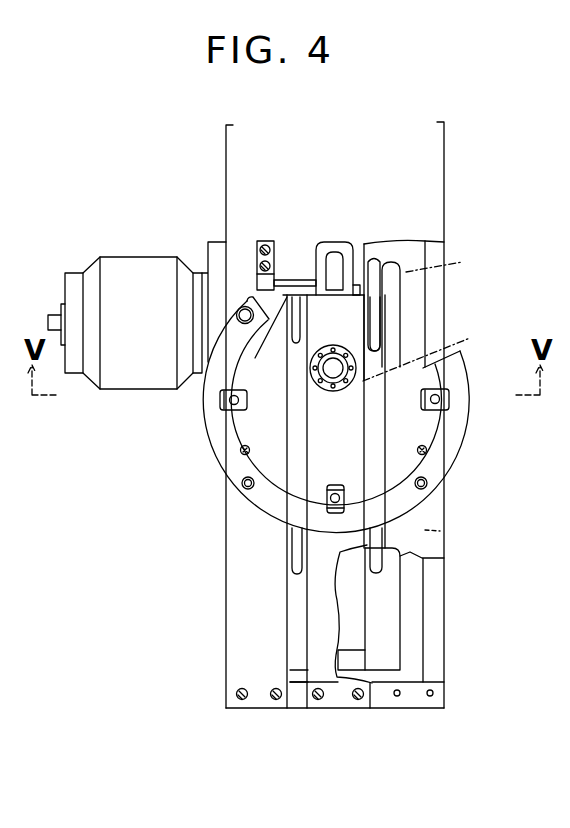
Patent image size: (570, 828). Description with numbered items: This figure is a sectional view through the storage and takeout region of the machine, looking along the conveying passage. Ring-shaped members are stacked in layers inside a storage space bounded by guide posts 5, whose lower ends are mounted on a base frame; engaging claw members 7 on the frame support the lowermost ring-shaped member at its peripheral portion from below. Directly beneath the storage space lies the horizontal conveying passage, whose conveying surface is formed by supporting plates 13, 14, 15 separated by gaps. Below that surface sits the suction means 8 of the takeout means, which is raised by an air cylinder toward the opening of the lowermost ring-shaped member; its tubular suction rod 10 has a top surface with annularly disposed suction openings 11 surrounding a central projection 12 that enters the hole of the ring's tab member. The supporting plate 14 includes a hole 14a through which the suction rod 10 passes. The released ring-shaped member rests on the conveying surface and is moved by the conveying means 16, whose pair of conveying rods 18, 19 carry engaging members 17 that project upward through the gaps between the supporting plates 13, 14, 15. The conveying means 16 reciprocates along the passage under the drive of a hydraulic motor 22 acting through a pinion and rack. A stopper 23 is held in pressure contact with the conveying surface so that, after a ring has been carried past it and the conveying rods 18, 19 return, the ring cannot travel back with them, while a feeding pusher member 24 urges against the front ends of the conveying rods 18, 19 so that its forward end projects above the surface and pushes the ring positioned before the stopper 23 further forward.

The guide post 5 is at (243, 452).
The engaging claw member 7 is at (219, 400).
The suction means 8 is at (366, 379).
The tubular suction rod 10 is at (347, 392).
The suction opening 11 is at (341, 352).
The projection 12 is at (318, 389).
The supporting plate 13 is at (245, 586).
The supporting plate 14 is at (336, 678).
The hole 14a is at (343, 393).
The supporting plate 15 is at (445, 530).
The conveying means 16 is at (386, 617).
The engaging member 17 is at (287, 547).
The conveying rod 18 is at (293, 624).
The conveying rod 19 is at (380, 655).
The hydraulic motor 22 is at (142, 268).
The stopper 23 is at (342, 258).
The feeding pusher member 24 is at (376, 285).